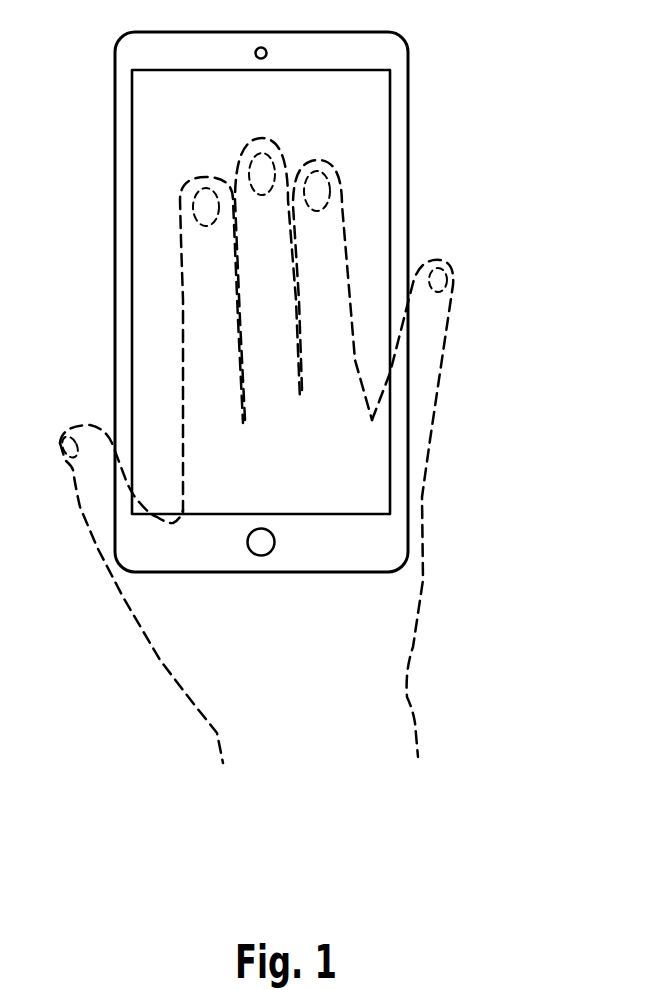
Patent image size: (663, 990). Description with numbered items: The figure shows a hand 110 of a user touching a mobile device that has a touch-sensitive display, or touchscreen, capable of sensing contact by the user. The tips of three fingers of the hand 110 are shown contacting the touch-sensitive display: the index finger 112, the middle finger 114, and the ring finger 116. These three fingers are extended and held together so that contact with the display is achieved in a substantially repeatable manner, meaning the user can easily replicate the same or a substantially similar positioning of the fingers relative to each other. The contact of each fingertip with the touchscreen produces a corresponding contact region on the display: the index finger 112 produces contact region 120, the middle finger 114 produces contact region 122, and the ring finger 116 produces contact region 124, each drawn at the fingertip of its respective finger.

The hand 110 is at (412, 673).
The index finger 112 is at (195, 177).
The middle finger 114 is at (247, 142).
The ring finger 116 is at (318, 162).
The contact region 120 is at (210, 227).
The contact region 122 is at (267, 190).
The contact region 124 is at (324, 210).